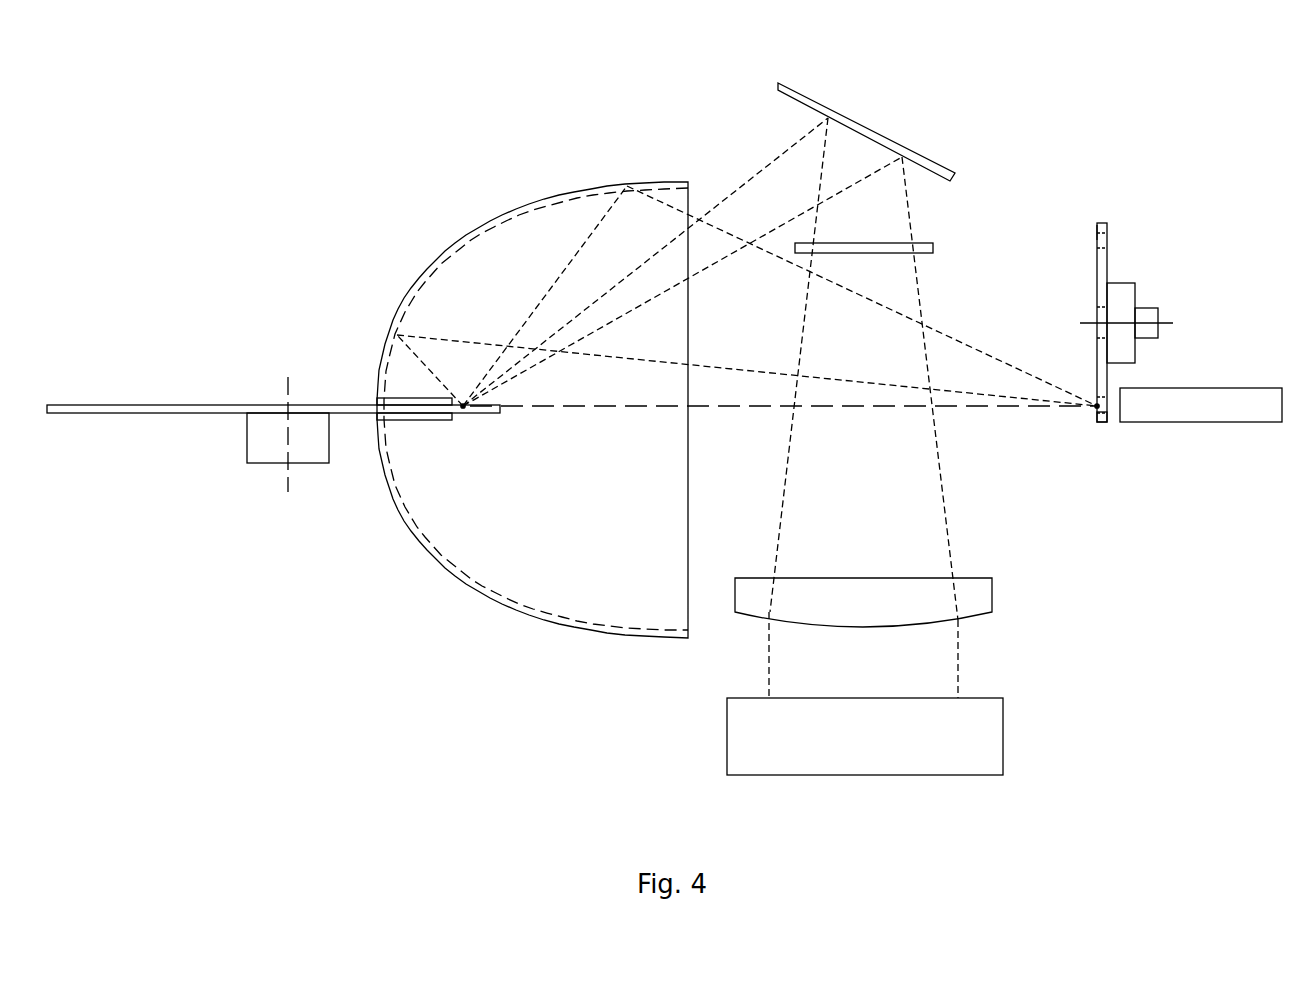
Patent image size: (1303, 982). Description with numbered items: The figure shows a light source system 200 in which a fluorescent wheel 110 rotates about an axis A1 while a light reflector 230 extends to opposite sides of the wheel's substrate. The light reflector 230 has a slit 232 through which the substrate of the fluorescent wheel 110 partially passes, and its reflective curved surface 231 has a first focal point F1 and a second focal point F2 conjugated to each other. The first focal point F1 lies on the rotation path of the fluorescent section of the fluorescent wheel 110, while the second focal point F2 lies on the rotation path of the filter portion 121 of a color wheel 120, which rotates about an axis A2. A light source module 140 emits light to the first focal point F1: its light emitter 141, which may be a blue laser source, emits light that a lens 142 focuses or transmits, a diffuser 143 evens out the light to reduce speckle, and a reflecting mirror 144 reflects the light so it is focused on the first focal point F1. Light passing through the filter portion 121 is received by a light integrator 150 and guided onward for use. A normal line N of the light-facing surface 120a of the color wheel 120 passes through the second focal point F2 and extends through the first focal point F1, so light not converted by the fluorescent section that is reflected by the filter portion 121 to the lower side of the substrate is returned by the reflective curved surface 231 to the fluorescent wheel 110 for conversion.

The light source system 200 is at (175, 52).
The fluorescent wheel 110 is at (92, 405).
The axis A1 is at (288, 386).
The first focal point F1 is at (462, 404).
The light reflector 230 is at (479, 229).
The reflective curved surface 231 is at (548, 199).
The slit 232 is at (376, 417).
The normal line N is at (738, 411).
The light source module 140 is at (889, 109).
The reflecting mirror 144 is at (930, 166).
The diffuser 143 is at (933, 243).
The lens 142 is at (992, 596).
The light emitter 141 is at (1003, 742).
The color wheel 120 is at (1102, 223).
The light-facing surface 120a is at (1097, 231).
The filter portion 121 is at (1103, 418).
The axis A2 is at (1167, 322).
The second focal point F2 is at (1097, 406).
The light integrator 150 is at (1230, 390).